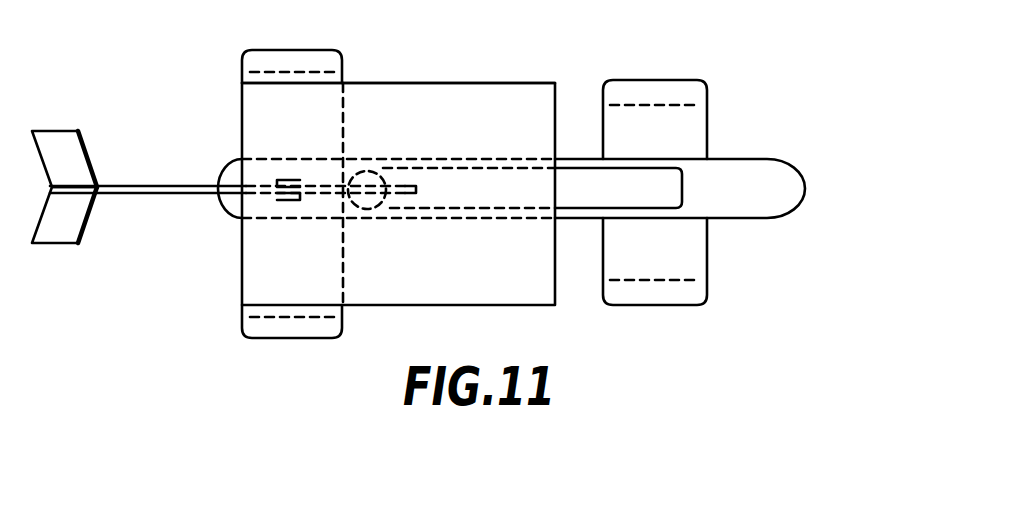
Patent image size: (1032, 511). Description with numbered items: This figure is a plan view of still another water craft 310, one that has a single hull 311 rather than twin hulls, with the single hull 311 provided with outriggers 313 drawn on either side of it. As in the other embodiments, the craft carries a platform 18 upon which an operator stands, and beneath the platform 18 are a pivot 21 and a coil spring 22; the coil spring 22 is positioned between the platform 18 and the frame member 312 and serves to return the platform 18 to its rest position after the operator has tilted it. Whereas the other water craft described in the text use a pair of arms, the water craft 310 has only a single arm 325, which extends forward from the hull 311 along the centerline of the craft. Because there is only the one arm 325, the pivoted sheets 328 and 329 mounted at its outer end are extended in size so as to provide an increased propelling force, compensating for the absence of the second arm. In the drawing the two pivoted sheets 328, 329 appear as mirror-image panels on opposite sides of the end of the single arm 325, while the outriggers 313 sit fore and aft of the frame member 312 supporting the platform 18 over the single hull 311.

The platform 18 is at (513, 82).
The pivot 21 is at (288, 178).
The coil spring 22 is at (373, 173).
The water craft 310 is at (782, 83).
The single hull 311 is at (752, 175).
The frame 312 is at (342, 263).
The outriggers 313 is at (325, 62).
The single arm 325 is at (148, 187).
The pivoted sheet 328 is at (55, 147).
The pivoted sheet 329 is at (67, 227).